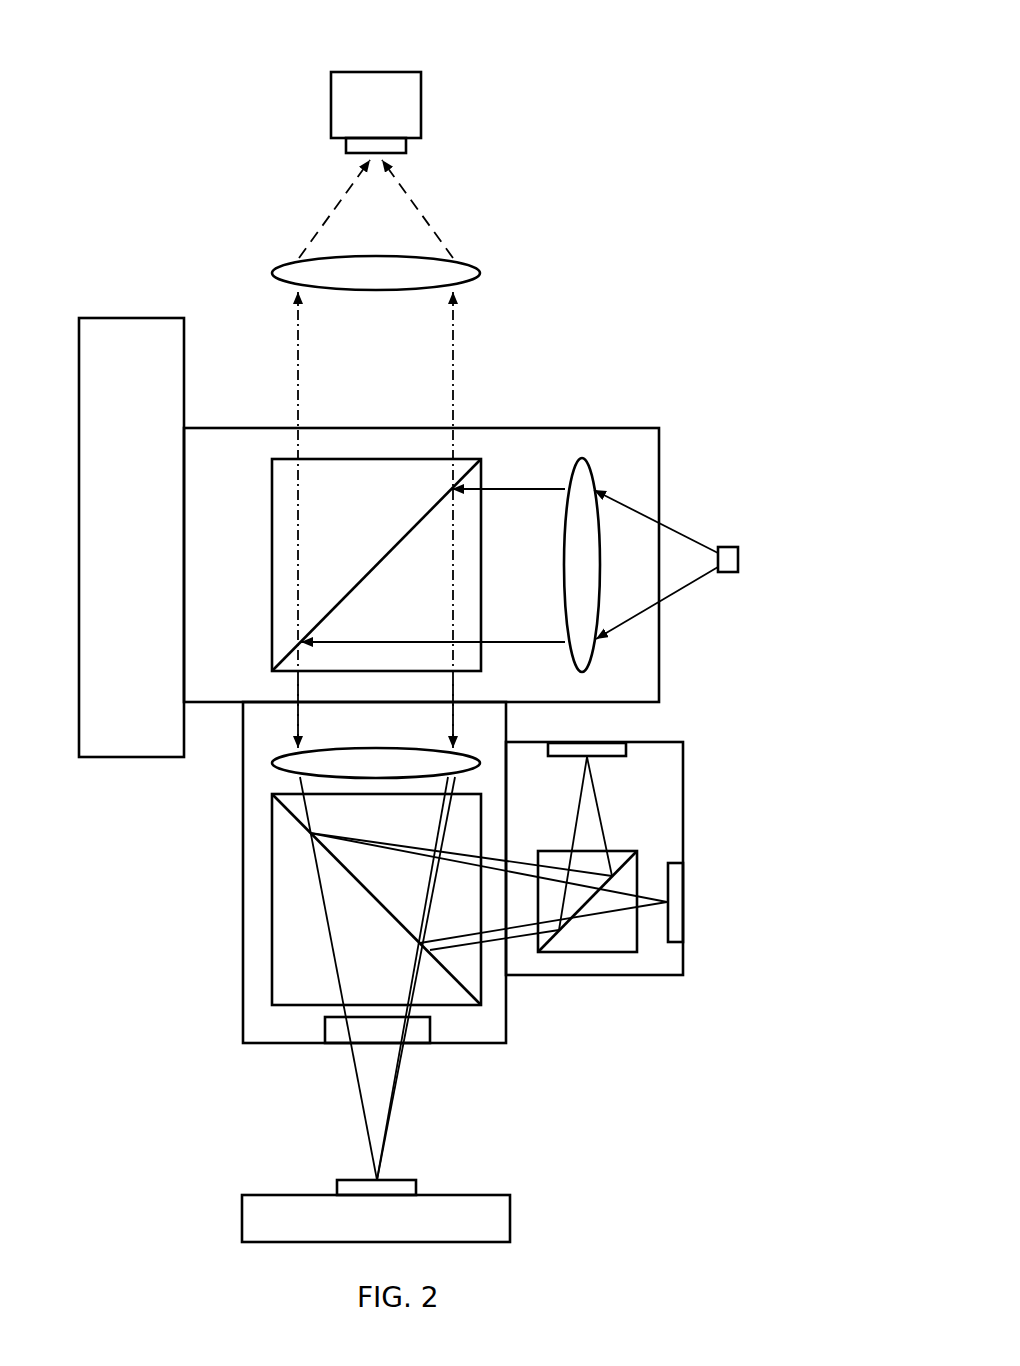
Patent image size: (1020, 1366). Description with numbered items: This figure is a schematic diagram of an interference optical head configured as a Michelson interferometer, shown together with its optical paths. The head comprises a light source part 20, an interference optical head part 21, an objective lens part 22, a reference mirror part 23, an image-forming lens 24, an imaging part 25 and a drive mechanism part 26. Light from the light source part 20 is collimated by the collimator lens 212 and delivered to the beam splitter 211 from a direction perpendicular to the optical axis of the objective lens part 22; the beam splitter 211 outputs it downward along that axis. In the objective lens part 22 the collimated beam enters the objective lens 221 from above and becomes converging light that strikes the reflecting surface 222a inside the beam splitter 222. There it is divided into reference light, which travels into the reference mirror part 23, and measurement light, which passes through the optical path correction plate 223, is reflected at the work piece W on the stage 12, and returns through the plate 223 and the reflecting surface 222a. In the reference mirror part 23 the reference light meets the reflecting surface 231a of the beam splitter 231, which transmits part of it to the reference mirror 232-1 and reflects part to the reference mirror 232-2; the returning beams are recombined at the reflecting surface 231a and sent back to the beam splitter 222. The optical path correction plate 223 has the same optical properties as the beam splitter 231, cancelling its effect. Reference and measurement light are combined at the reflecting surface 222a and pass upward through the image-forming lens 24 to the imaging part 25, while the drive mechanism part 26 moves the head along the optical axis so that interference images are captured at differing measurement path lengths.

The stage 12 is at (510, 1212).
The work piece W is at (415, 1180).
The light source part 20 is at (740, 542).
The interference optical head part 21 is at (600, 427).
The beam splitter 211 is at (288, 457).
The collimator lens 212 is at (572, 472).
The objective lens part 22 is at (242, 813).
The objective lens 221 is at (273, 768).
The beam splitter 222 is at (270, 975).
The reflecting surface 222a is at (297, 815).
The optical path correction plate 223 is at (323, 1028).
The reference mirror part 23 is at (670, 977).
The beam splitter 231 is at (570, 953).
The reflecting surface 231a is at (548, 950).
The reference mirror 232-1 is at (677, 863).
The reference mirror 232-2 is at (630, 750).
The image-forming lens 24 is at (472, 265).
The imaging part 25 is at (400, 72).
The drive mechanism part 26 is at (125, 318).